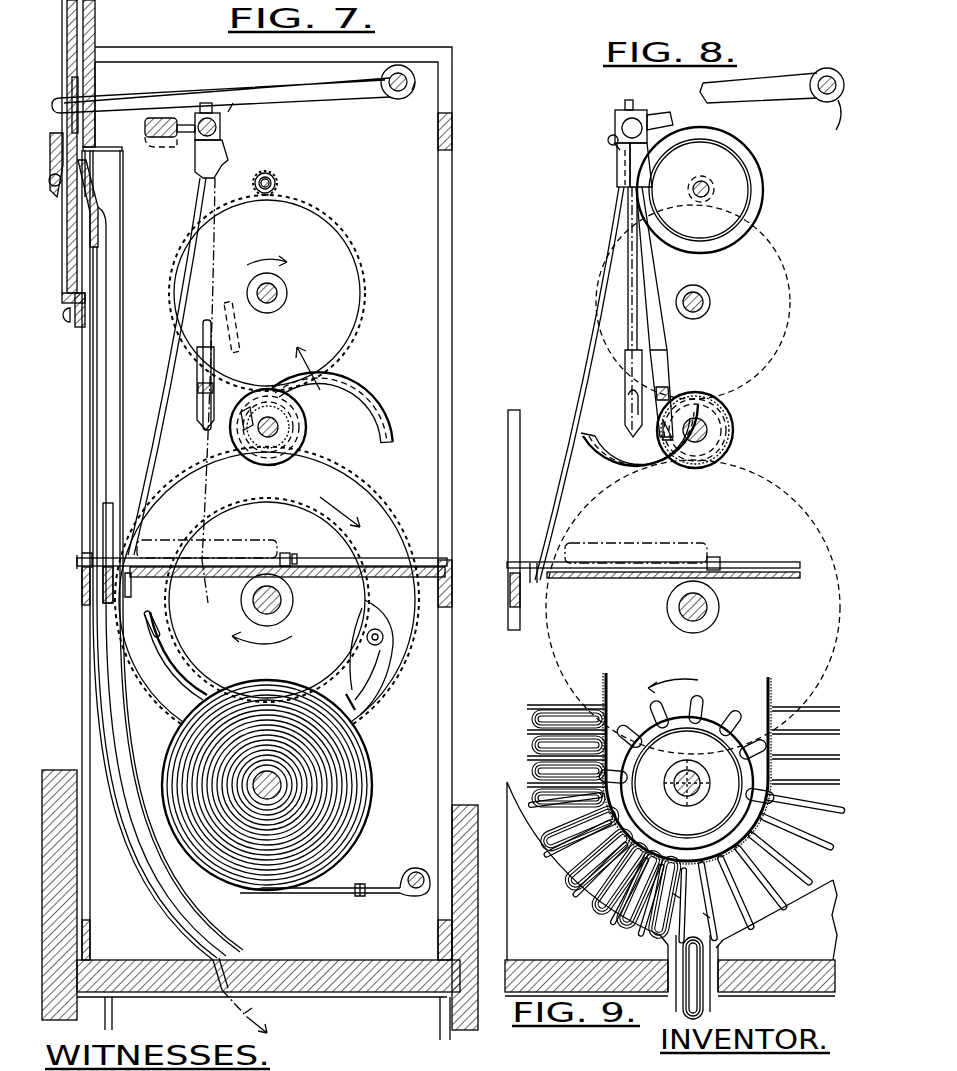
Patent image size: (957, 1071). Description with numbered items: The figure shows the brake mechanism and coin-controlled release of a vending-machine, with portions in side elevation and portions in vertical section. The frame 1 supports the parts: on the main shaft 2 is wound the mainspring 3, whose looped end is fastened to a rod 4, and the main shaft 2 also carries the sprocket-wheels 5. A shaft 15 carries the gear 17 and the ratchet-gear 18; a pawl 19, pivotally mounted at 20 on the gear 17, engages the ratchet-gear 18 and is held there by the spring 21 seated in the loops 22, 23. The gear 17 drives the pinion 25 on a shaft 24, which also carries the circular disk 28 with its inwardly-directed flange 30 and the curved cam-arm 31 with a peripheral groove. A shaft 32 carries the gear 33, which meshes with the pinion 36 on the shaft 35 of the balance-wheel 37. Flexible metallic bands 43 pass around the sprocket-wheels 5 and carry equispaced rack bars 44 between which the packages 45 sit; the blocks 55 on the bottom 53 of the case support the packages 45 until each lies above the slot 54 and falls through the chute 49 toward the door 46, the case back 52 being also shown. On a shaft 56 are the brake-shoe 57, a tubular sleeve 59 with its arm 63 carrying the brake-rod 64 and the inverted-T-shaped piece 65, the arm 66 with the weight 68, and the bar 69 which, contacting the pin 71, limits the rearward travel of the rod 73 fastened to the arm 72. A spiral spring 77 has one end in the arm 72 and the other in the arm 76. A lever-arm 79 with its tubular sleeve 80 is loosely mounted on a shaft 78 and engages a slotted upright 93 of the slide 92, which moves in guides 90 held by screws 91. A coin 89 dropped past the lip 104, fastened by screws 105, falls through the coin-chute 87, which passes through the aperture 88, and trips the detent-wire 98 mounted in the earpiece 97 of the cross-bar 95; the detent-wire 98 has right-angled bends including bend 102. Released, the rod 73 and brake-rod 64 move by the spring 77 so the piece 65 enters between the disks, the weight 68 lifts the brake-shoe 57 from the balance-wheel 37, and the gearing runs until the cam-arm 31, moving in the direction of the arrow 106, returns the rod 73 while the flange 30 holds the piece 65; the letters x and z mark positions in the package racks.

In FIG. 7, the frame 1 is at (80, 430).
In FIG. 8, the frame 1 is at (510, 516).
In FIG. 7, the main shaft 2 is at (281, 784).
In FIG. 9, the main shaft 2 is at (702, 783).
In FIG. 7, the mainspring 3 is at (372, 802).
In FIG. 7, the rod 4 is at (412, 896).
In FIG. 9, the sprocket-wheels 5 is at (700, 707).
In FIG. 7, the shaft 15 is at (293, 600).
In FIG. 8, the shaft 15 is at (720, 607).
In FIG. 7, the gear 17 is at (392, 682).
In FIG. 8, the gear 17 is at (808, 508).
In FIG. 7, the ratchet-gear 18 is at (352, 533).
In FIG. 7, the pawl 19 is at (362, 628).
In FIG. 7, the pivot 20 is at (366, 675).
In FIG. 7, the spring 21 is at (395, 637).
In FIG. 7, the loop 22 is at (160, 637).
In FIG. 7, the loop 23 is at (358, 703).
In FIG. 7, the shaft 24 is at (278, 427).
In FIG. 8, the shaft 24 is at (708, 430).
In FIG. 7, the pinion 25 is at (290, 397).
In FIG. 8, the pinion 25 is at (712, 398).
In FIG. 7, the circular disk 28 is at (252, 392).
In FIG. 8, the circular disk 28 is at (733, 447).
In FIG. 7, the flange 30 is at (300, 450).
In FIG. 8, the flange 30 is at (733, 428).
In FIG. 7, the curved cam-arm 31 is at (343, 407).
In FIG. 8, the curved cam-arm 31 is at (634, 498).
In FIG. 7, the shaft 32 is at (288, 293).
In FIG. 8, the shaft 32 is at (710, 302).
In FIG. 7, the gear 33 is at (364, 293).
In FIG. 8, the gear 33 is at (706, 302).
In FIG. 7, the shaft 35 is at (277, 183).
In FIG. 8, the shaft 35 is at (710, 188).
In FIG. 7, the pinion 36 is at (280, 167).
In FIG. 8, the balance-wheel 37 is at (766, 186).
In FIG. 9, the flexible metallic band 43 is at (606, 673).
In FIG. 9, the rack bar 44 is at (549, 705).
In FIG. 9, the package 45 is at (530, 719).
In FIG. 7, the hinged door 46 is at (57, 880).
In FIG. 9, the chute 49 is at (705, 1016).
In FIG. 7, the back 52 is at (462, 805).
In FIG. 7, the bottom 53 is at (268, 990).
In FIG. 9, the bottom 53 is at (540, 962).
In FIG. 9, the slot 54 is at (720, 960).
In FIG. 9, the block 55 is at (779, 924).
In FIG. 7, the shaft 56 is at (220, 127).
In FIG. 8, the shaft 56 is at (615, 125).
In FIG. 8, the brake-shoe 57 is at (663, 113).
In FIG. 8, the tubular sleeve 59 is at (622, 160).
In FIG. 8, the arm 63 is at (625, 175).
In FIG. 7, the brake-rod 64 is at (203, 334).
In FIG. 8, the brake-rod 64 is at (652, 272).
In FIG. 7, the inverted-T-shaped piece 65 is at (203, 420).
In FIG. 8, the inverted-T-shaped piece 65 is at (668, 362).
In FIG. 7, the arm 66 is at (186, 132).
In FIG. 7, the weight 68 is at (145, 127).
In FIG. 7, the bar 69 is at (196, 102).
In FIG. 8, the bar 69 is at (628, 100).
In FIG. 7, the pin 71 is at (233, 103).
In FIG. 7, the arm 72 is at (198, 170).
In FIG. 8, the arm 72 is at (634, 180).
In FIG. 7, the rod 73 is at (200, 210).
In FIG. 8, the rod 73 is at (605, 230).
In FIG. 8, the arm 76 is at (608, 140).
In FIG. 8, the spiral spring 77 is at (616, 146).
In FIG. 7, the shaft 78 is at (415, 82).
In FIG. 8, the shaft 78 is at (833, 124).
In FIG. 7, the lever-arm 79 is at (221, 99).
In FIG. 8, the lever-arm 79 is at (758, 99).
In FIG. 7, the tubular sleeve 80 is at (398, 99).
In FIG. 8, the tubular sleeve 80 is at (818, 97).
In FIG. 7, the coin-chute 87 is at (107, 268).
In FIG. 7, the aperture 88 is at (222, 962).
In FIG. 7, the coin 89 is at (108, 503).
In FIG. 7, the guide 90 is at (65, 28).
In FIG. 7, the screw 91 is at (68, 322).
In FIG. 7, the slide 92 is at (67, 253).
In FIG. 7, the upright 93 is at (72, 90).
In FIG. 7, the cross-bar 95 is at (430, 567).
In FIG. 8, the cross-bar 95 is at (673, 585).
In FIG. 7, the earpiece 97 is at (291, 560).
In FIG. 8, the earpiece 97 is at (722, 559).
In FIG. 7, the detent-wire 98 is at (246, 556).
In FIG. 8, the detent-wire 98 is at (656, 562).
In FIG. 7, the right-angled bend 102 is at (294, 554).
In FIG. 7, the lip 104 is at (52, 140).
In FIG. 7, the screw 105 is at (55, 186).
In FIG. 7, the arrow 106 is at (316, 360).
In FIG. 9, the rod x is at (678, 898).
In FIG. 9, the rod z is at (705, 917).